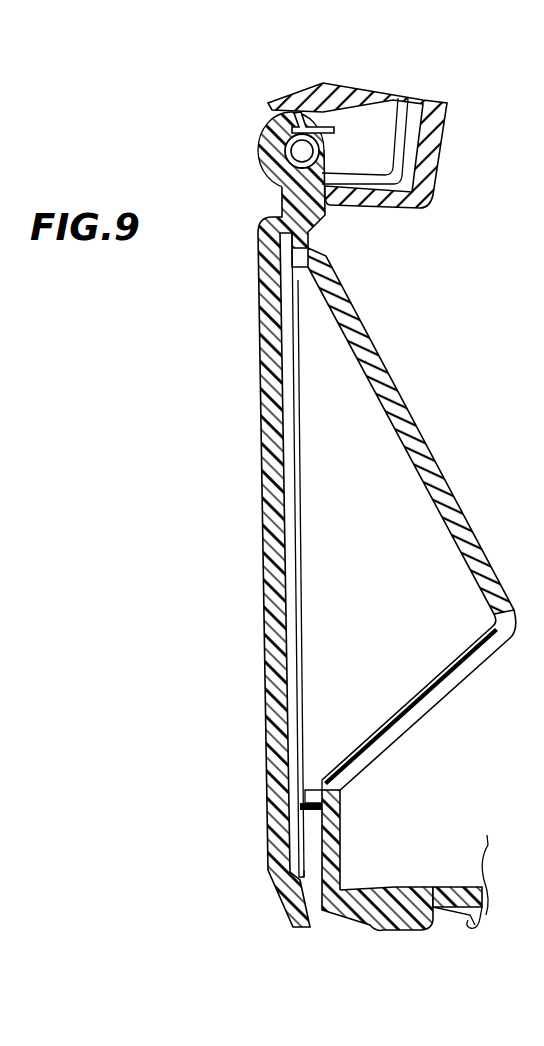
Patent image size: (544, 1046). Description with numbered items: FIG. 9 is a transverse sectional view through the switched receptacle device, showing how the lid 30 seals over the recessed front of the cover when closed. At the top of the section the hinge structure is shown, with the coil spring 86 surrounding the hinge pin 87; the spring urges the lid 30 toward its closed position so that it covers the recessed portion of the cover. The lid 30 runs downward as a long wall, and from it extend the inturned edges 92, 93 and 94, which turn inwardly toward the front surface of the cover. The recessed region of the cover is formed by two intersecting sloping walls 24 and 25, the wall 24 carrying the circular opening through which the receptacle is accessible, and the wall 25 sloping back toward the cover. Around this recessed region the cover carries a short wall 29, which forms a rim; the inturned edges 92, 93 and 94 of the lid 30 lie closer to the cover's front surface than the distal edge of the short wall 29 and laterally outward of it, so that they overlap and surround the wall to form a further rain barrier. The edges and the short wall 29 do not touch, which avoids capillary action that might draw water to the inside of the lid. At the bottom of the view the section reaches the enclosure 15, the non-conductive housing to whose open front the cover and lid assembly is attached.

The enclosure 15 is at (472, 920).
The sloping wall 24 is at (474, 575).
The sloping wall 25 is at (425, 684).
The short wall 29 is at (266, 758).
The lid 30 is at (262, 410).
The coil spring 86 is at (284, 131).
The hinge pin 87 is at (293, 158).
The inturned edge 92 is at (306, 242).
The inturned edge 93 is at (303, 830).
The inturned edge 94 is at (305, 870).